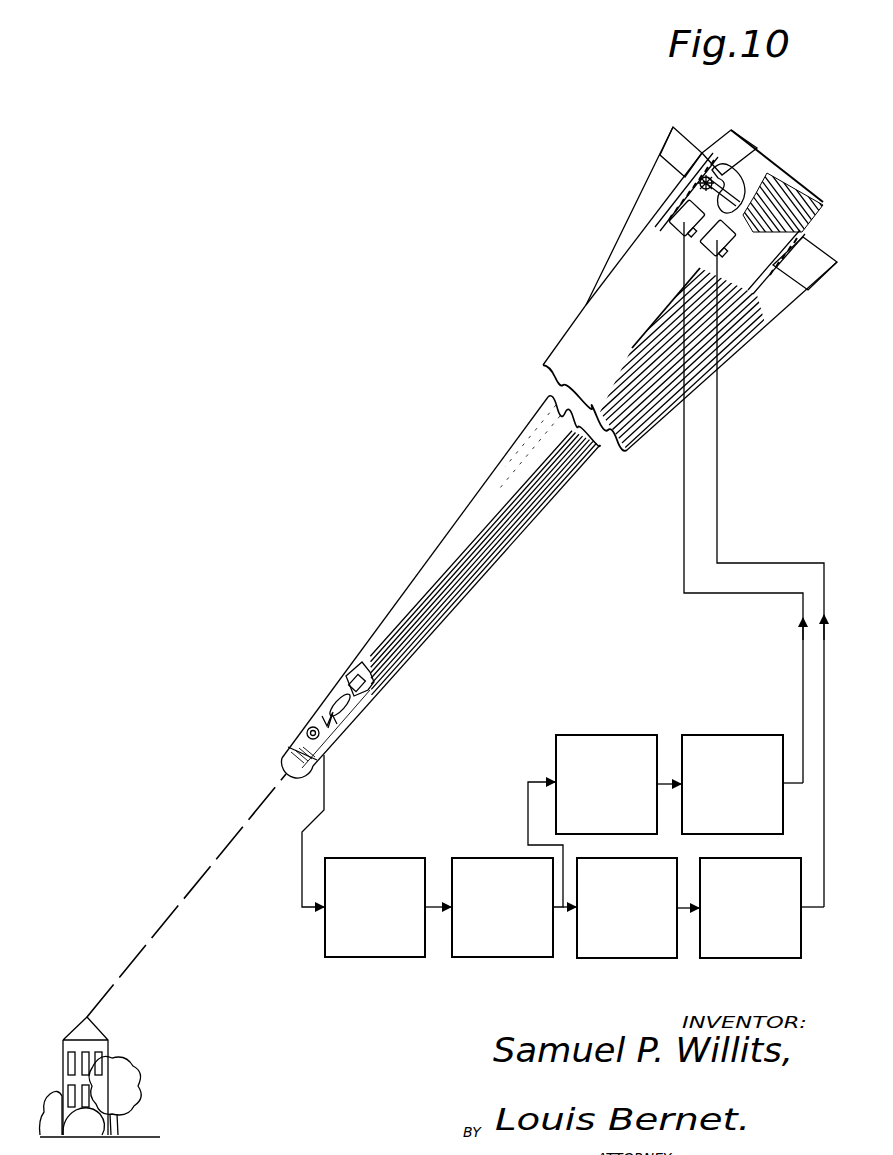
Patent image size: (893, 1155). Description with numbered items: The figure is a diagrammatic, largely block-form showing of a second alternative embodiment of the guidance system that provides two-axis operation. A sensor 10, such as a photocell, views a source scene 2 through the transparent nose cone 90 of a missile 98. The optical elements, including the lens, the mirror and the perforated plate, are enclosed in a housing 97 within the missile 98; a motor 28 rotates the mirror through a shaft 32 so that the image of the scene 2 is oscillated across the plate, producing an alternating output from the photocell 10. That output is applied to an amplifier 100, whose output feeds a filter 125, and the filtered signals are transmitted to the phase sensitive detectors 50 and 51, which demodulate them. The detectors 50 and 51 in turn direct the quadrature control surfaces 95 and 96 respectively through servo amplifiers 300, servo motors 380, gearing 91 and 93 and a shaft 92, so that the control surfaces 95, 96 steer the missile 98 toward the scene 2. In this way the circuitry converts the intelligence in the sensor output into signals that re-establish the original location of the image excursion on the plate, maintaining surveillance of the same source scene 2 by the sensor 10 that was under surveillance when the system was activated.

The source scene 2 is at (75, 1026).
The photocell 10 is at (307, 731).
The motor 28 is at (372, 686).
The shaft 32 is at (348, 708).
The phase sensitive detector 50 is at (610, 744).
The phase sensitive detector 51 is at (626, 958).
The transparent nose cone 90 is at (288, 766).
The gearing 91 is at (700, 188).
The shaft 92 is at (740, 148).
The gearing 93 is at (737, 180).
The quadrature control surface 95 is at (684, 140).
The quadrature control surface 96 is at (777, 170).
The housing 97 is at (320, 720).
The missile 98 is at (512, 466).
The amplifier 100 is at (370, 958).
The filter 125 is at (492, 958).
The servo amplifier 300 is at (738, 958).
The servo motor 380 is at (676, 207).